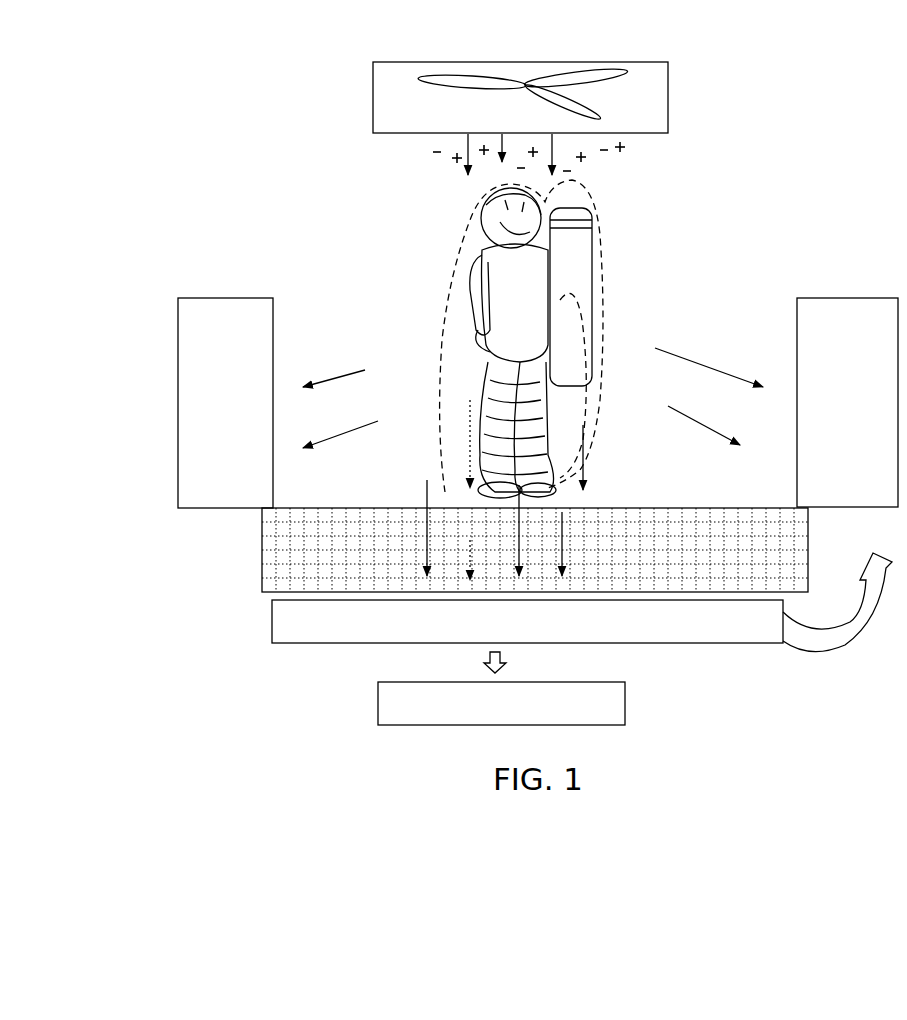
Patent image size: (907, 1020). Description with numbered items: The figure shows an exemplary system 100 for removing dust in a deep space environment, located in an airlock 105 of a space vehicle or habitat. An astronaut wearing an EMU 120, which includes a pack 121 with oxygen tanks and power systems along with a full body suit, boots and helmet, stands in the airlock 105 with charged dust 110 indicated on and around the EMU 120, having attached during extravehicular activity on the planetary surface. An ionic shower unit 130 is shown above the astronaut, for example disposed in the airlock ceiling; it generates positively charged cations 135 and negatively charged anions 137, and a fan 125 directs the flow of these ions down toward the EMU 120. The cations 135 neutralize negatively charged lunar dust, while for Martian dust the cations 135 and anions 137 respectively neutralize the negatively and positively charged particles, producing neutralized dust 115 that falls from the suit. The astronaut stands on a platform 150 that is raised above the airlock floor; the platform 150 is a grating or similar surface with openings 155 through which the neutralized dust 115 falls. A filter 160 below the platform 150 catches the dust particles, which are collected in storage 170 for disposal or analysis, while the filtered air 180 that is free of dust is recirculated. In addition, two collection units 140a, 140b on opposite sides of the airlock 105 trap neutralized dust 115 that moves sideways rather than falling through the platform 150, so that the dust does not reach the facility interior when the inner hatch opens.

The system 100 is at (308, 88).
The airlock 105 is at (753, 494).
The dust 110 is at (448, 343).
The neutralized dust 115 is at (543, 428).
The EMU 120 is at (490, 258).
The pack 121 is at (598, 385).
The fan 125 is at (573, 73).
The ionic shower unit 130 is at (438, 124).
The cations 135 is at (631, 150).
The anions 137 is at (605, 158).
The collection unit 140a is at (225, 403).
The collection unit 140b is at (847, 402).
The platform 150 is at (262, 568).
The openings 155 is at (314, 581).
The filter 160 is at (527, 621).
The storage 170 is at (501, 688).
The filtered air 180 is at (824, 626).